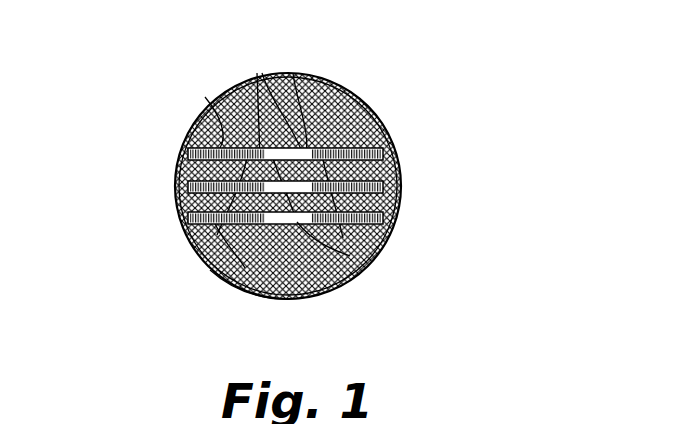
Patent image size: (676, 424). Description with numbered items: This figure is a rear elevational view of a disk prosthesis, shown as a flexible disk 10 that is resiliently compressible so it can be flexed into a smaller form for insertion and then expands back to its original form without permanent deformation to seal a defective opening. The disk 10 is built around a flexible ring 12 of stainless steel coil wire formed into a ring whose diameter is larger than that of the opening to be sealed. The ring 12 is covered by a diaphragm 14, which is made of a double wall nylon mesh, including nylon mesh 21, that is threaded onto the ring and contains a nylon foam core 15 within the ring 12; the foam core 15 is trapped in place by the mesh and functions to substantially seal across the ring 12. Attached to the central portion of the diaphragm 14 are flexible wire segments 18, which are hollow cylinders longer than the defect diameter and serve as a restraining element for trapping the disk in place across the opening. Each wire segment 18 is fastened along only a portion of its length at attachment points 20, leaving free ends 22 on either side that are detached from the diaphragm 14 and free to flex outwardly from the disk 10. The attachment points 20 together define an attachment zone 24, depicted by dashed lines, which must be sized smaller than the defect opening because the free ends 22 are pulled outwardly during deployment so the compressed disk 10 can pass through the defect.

The flexible disk 10 is at (433, 95).
The flexible ring 12 is at (393, 127).
The diaphragm 14 is at (369, 100).
The nylon foam core 15 is at (293, 73).
The flexible wire segments 18 is at (205, 97).
The attachment points 20 is at (257, 73).
The nylon mesh 21 is at (350, 256).
The free ends 22 is at (183, 155).
The attachment zone 24 is at (325, 292).